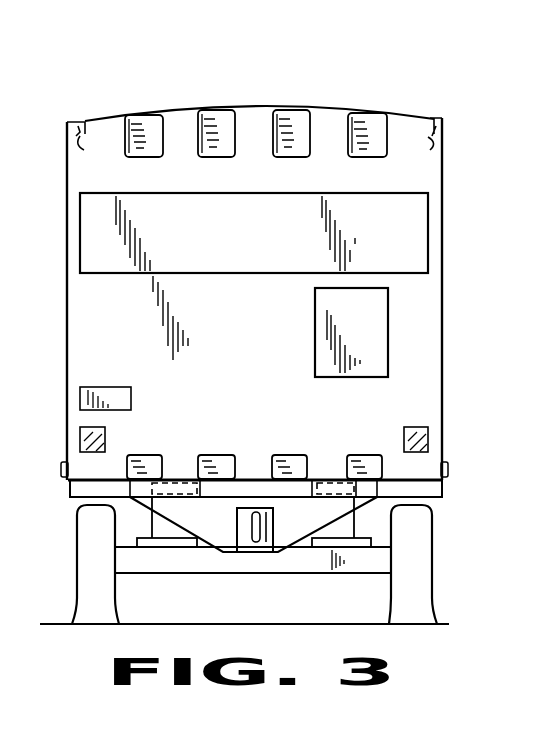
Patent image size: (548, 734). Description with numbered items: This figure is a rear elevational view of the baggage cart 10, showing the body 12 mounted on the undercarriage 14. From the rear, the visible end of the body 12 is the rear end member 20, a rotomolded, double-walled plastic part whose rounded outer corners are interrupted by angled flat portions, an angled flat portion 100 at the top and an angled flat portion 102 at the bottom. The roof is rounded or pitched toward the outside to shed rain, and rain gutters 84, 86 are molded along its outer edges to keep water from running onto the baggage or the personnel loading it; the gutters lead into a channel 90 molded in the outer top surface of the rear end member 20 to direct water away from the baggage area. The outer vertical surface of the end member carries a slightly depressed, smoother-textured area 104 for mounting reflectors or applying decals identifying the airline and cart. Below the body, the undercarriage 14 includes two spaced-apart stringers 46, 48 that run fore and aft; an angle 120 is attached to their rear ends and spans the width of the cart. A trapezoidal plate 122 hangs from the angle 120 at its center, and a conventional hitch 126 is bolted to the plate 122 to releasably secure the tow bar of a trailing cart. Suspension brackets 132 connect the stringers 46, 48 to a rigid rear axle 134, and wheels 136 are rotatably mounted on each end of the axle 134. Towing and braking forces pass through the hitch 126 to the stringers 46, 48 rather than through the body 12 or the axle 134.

The baggage cart 10 is at (267, 74).
The body 12 is at (169, 100).
The undercarriage 14 is at (247, 580).
The rear end member 20 is at (72, 186).
The stringer 46 is at (178, 483).
The stringer 48 is at (331, 481).
The rain gutter 84 is at (79, 127).
The rain gutter 86 is at (433, 121).
The channel 90 is at (430, 131).
The angled flat portion 100 is at (357, 157).
The angled flat portion 102 is at (372, 455).
The depressed area 104 is at (320, 294).
The angle 120 is at (72, 488).
The trapezoidal plate 122 is at (228, 524).
The hitch 126 is at (228, 546).
The suspension bracket 132 is at (343, 528).
The rear axle 134 is at (132, 569).
The wheel 136 is at (401, 601).